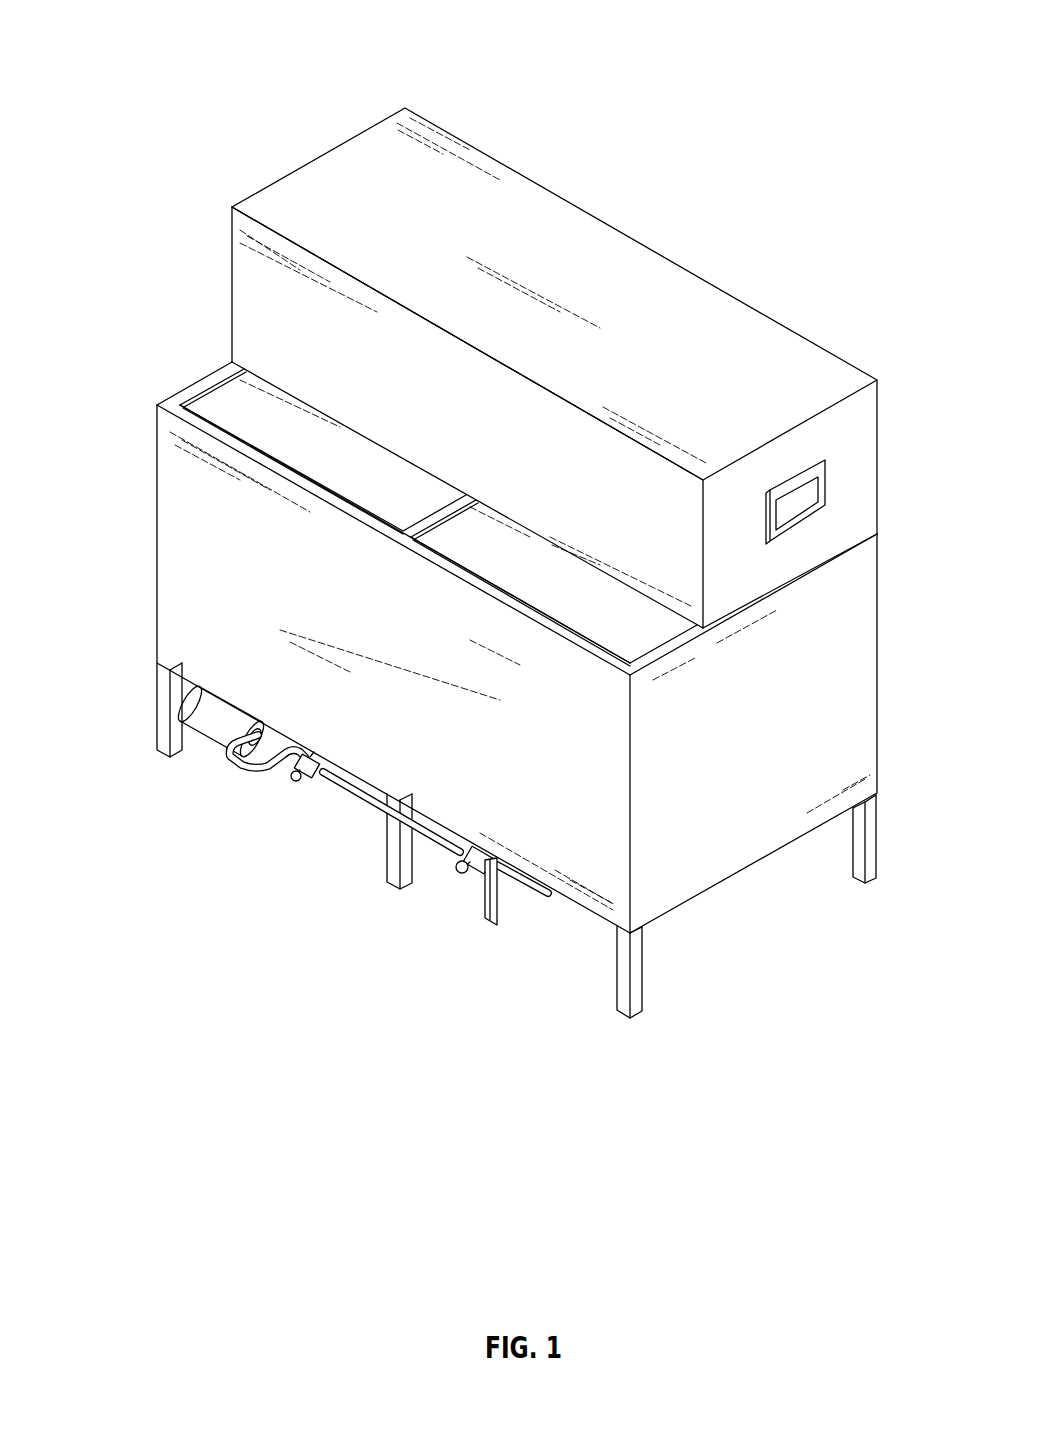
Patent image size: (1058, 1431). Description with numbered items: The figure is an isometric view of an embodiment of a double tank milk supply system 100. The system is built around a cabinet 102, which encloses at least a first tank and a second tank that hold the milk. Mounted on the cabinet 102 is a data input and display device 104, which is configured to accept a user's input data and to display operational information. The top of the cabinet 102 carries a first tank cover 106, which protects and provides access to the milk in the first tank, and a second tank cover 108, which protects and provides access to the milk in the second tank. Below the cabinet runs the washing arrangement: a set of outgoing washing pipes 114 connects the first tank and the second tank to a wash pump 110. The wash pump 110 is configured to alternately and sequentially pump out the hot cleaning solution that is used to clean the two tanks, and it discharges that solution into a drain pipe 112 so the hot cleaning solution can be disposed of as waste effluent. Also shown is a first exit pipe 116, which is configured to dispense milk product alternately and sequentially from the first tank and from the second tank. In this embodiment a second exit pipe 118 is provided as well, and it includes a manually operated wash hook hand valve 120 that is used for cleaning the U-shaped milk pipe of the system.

The double tank milk supply system 100 is at (826, 70).
The cabinet 102 is at (248, 172).
The data input and display device 104 is at (803, 500).
The first tank cover 106 is at (233, 400).
The second tank cover 108 is at (627, 642).
The wash pump 110 is at (203, 710).
The drain pipe 112 is at (247, 760).
The outgoing washing pipes 114 is at (347, 783).
The first exit pipe 116 is at (297, 773).
The second exit pipe 118 is at (460, 876).
The wash hook hand valve 120 is at (485, 920).